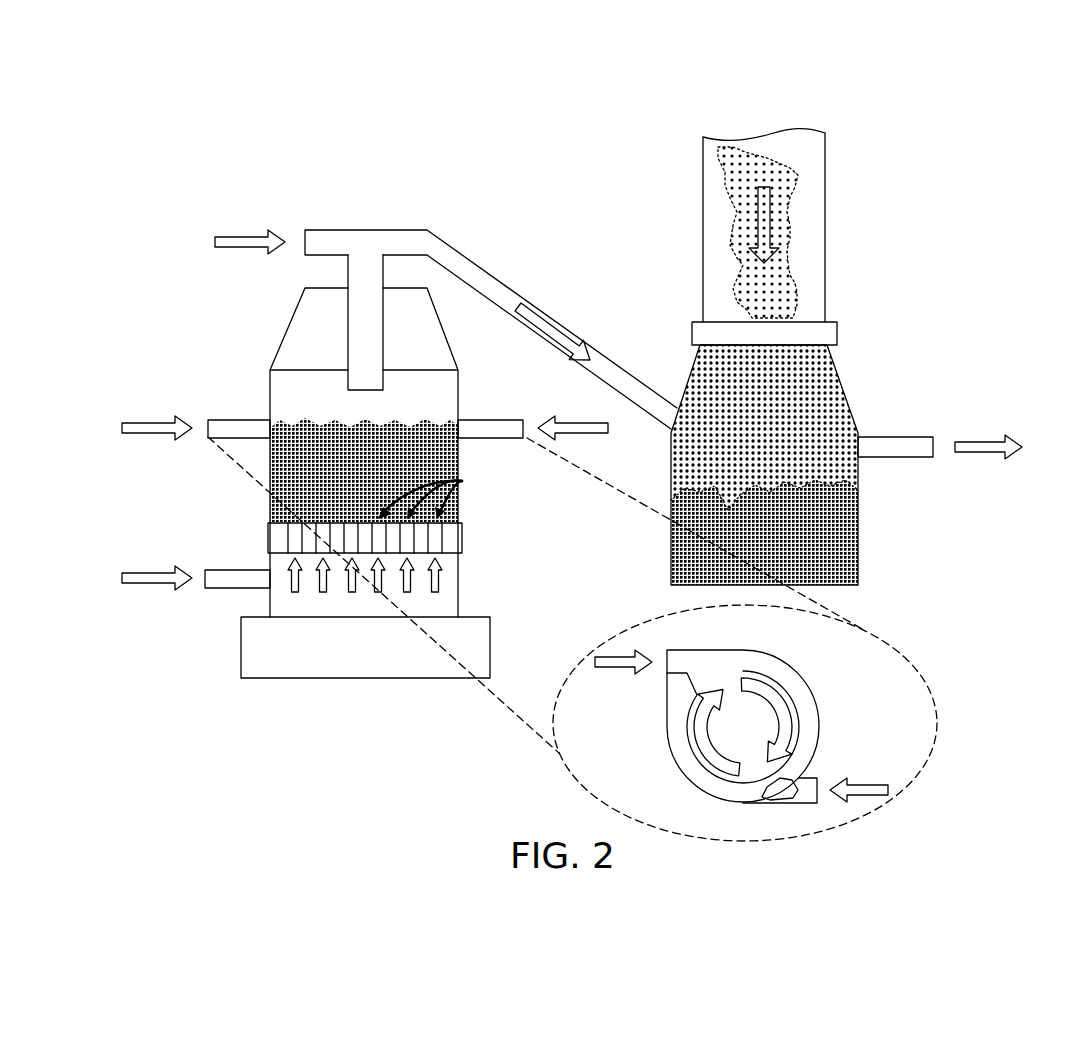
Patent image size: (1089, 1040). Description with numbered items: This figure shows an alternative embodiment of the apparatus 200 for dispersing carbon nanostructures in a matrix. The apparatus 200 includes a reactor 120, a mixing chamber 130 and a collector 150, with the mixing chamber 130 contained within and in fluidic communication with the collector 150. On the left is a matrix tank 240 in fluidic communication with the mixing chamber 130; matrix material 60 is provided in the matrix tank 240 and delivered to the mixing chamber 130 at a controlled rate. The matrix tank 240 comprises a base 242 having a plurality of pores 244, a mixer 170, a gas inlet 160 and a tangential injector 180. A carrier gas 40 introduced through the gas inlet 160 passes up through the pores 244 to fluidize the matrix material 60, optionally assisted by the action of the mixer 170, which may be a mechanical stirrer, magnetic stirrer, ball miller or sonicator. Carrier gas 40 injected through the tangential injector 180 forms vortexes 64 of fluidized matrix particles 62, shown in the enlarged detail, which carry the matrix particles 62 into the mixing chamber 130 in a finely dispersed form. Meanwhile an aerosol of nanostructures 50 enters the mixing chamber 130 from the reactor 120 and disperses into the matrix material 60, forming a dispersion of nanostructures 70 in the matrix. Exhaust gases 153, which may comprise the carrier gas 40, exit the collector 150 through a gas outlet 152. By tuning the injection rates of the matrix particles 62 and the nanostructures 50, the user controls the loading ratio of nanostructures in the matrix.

The carrier gas 40 is at (250, 237).
The nanostructures 50 is at (790, 298).
The matrix material 60 is at (300, 440).
The fluidized matrix particles 62 is at (545, 328).
The vortexes 64 is at (800, 702).
The dispersion of nanostructures 70 is at (825, 458).
The reactor 120 is at (844, 157).
The mixing chamber 130 is at (814, 413).
The collector 150 is at (838, 356).
The gas outlet 152 is at (903, 437).
The exhaust gases 153 is at (993, 440).
The gas inlet 160 is at (233, 590).
The mixer 170 is at (241, 663).
The tangential injector 180 is at (480, 420).
The apparatus 200 is at (277, 167).
The matrix tank 240 is at (216, 327).
The base 242 is at (268, 538).
The pores 244 is at (446, 491).